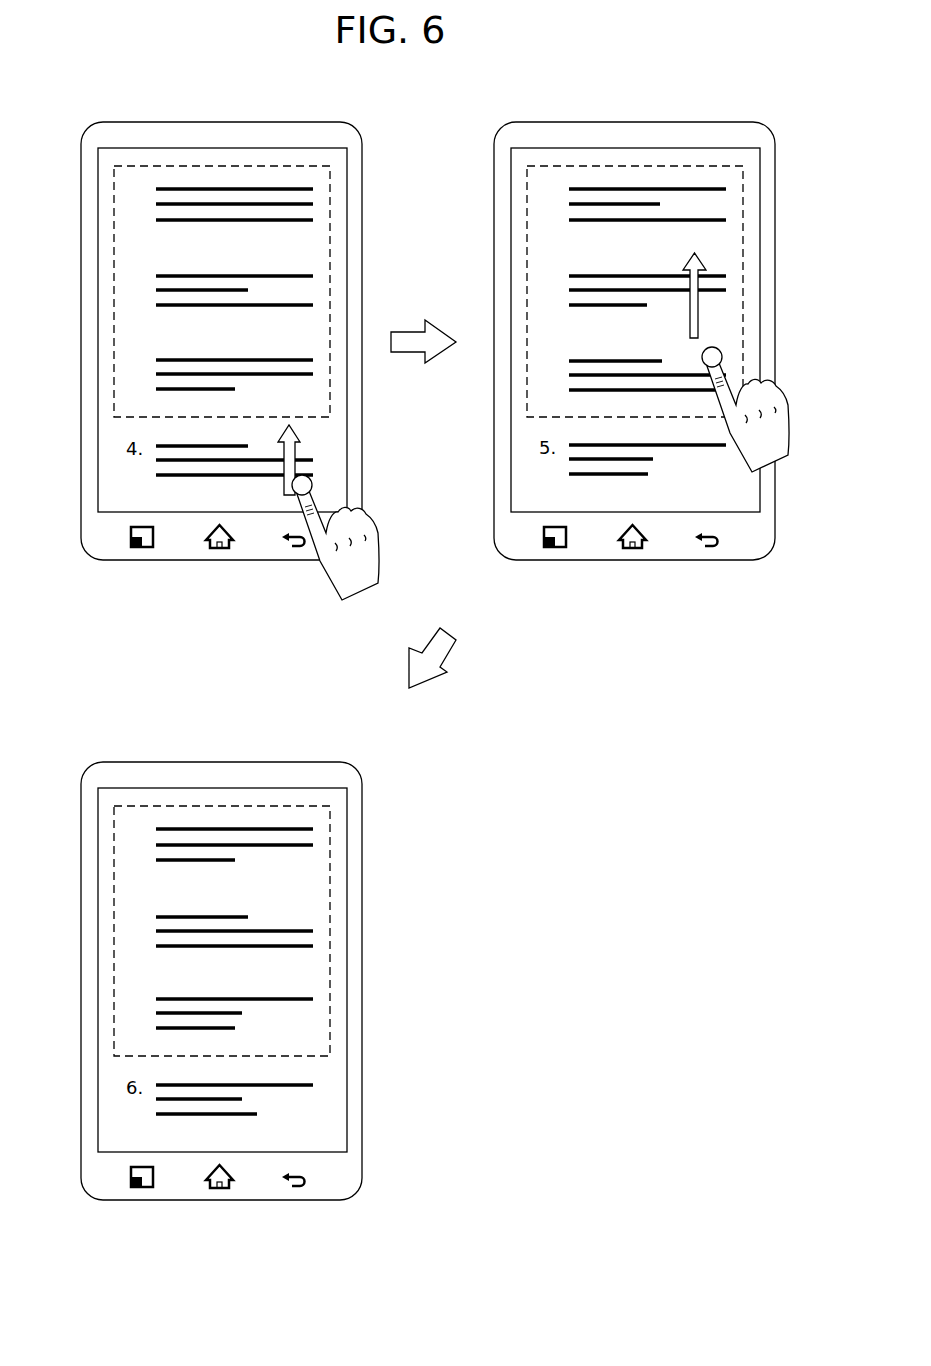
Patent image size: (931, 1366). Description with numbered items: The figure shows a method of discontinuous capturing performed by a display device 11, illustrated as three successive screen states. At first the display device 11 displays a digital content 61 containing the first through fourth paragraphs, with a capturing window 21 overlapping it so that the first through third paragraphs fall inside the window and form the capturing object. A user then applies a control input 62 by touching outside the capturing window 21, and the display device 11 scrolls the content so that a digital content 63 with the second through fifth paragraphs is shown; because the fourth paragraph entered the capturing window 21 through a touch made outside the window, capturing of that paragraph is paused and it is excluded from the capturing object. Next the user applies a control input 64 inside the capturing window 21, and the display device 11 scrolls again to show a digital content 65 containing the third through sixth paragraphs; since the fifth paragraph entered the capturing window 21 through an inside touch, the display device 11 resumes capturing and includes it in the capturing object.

The display device 11 is at (180, 562).
The capturing window 21 is at (260, 165).
The digital content 61 is at (211, 182).
The control input 62 is at (353, 563).
The digital content 63 is at (623, 180).
The control input 64 is at (765, 439).
The digital content 65 is at (212, 818).